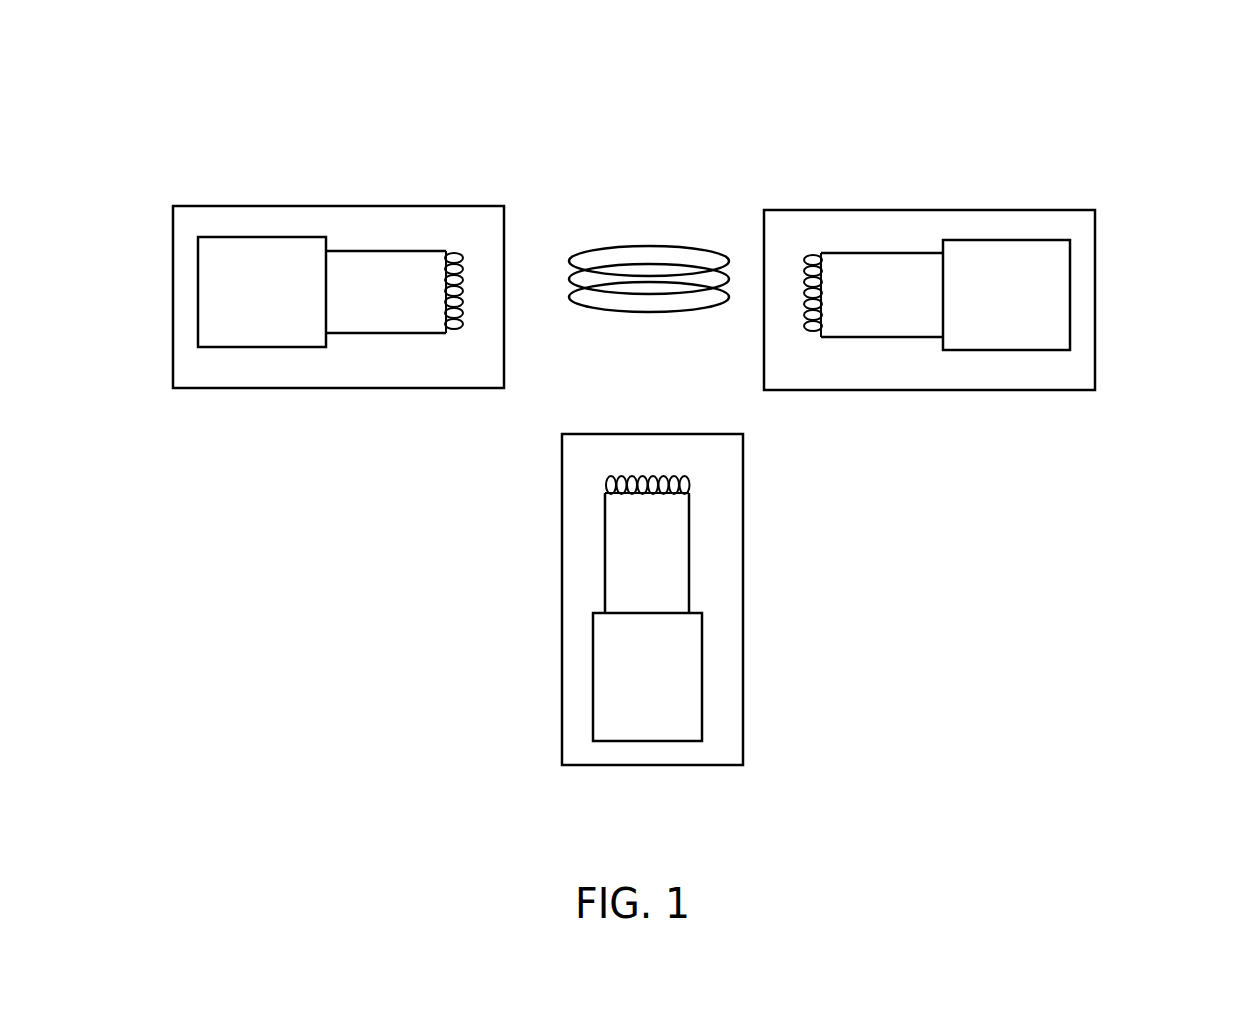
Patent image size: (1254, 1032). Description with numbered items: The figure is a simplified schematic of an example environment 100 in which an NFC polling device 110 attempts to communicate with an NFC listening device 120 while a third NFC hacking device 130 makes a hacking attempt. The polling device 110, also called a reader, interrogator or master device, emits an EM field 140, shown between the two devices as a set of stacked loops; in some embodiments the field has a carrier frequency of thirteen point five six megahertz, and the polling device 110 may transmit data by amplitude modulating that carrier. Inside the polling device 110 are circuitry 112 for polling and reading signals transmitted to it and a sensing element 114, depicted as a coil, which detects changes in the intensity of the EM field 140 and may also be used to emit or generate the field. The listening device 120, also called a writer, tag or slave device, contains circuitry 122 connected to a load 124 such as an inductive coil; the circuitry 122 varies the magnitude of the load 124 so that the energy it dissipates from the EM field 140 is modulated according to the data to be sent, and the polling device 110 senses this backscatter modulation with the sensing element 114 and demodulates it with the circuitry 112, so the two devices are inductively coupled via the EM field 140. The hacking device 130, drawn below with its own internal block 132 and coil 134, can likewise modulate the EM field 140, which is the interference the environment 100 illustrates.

The environment 100 is at (1184, 52).
The NFC polling device 110 is at (226, 196).
The circuitry 112 is at (263, 347).
The sensing element 114 is at (453, 333).
The NFC listening device 120 is at (1018, 197).
The circuitry 122 is at (1007, 350).
The load 124 is at (813, 337).
The NFC hacking device 130 is at (755, 606).
The third device circuitry 132 is at (702, 675).
The third device coil 134 is at (689, 485).
The EM field 140 is at (643, 246).